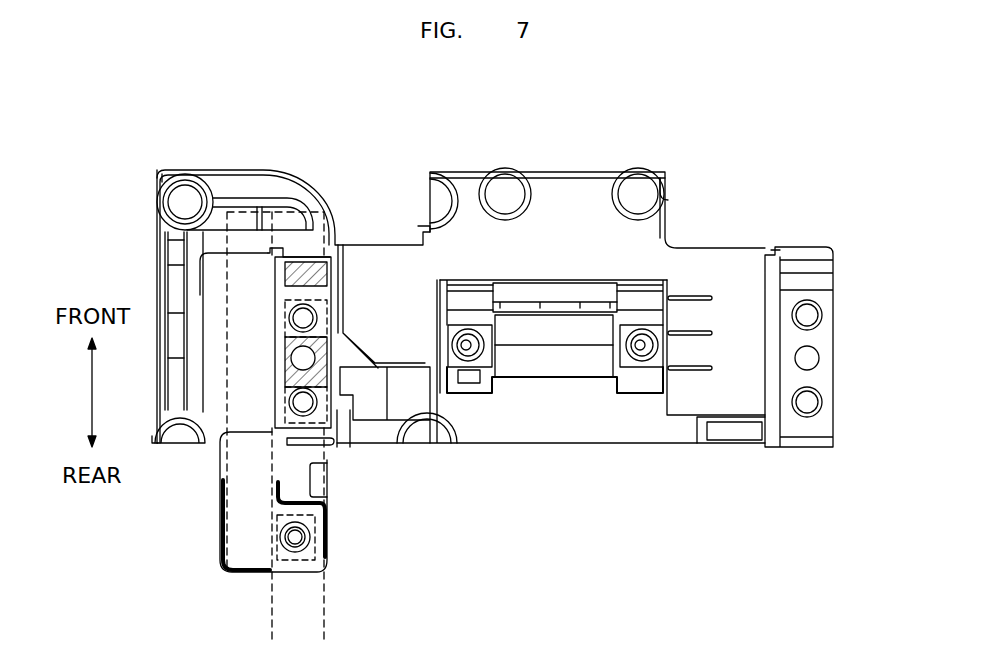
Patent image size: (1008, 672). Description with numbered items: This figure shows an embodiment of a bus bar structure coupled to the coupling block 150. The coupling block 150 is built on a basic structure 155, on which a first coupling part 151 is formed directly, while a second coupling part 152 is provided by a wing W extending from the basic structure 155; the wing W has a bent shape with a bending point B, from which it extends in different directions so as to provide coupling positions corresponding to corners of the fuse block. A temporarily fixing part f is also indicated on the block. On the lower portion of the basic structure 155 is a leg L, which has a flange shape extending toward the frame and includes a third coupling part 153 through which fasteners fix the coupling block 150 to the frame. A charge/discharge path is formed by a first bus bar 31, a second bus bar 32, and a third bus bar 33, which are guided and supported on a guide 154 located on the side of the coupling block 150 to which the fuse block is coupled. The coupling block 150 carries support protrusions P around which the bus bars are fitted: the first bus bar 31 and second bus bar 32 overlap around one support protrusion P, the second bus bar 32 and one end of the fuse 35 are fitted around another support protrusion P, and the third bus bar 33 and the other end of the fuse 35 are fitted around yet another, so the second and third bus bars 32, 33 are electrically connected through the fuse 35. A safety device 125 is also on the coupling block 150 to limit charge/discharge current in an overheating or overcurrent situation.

The coupling block 150 is at (150, 172).
The second coupling part 152 is at (200, 172).
The temporarily fixing part f is at (164, 175).
The first coupling part 151 is at (620, 170).
The basic structure 155 is at (640, 248).
The third coupling part 153 is at (820, 319).
The leg L is at (820, 359).
The safety device 125 is at (556, 355).
The fuse 35 is at (375, 360).
The third bus bar 33 is at (328, 470).
The support protrusion P is at (302, 304).
The bending point B is at (208, 256).
The second bus bar 32 is at (227, 468).
The guide 154 is at (243, 527).
The first bus bar 31 is at (318, 593).
The wing W is at (148, 271).